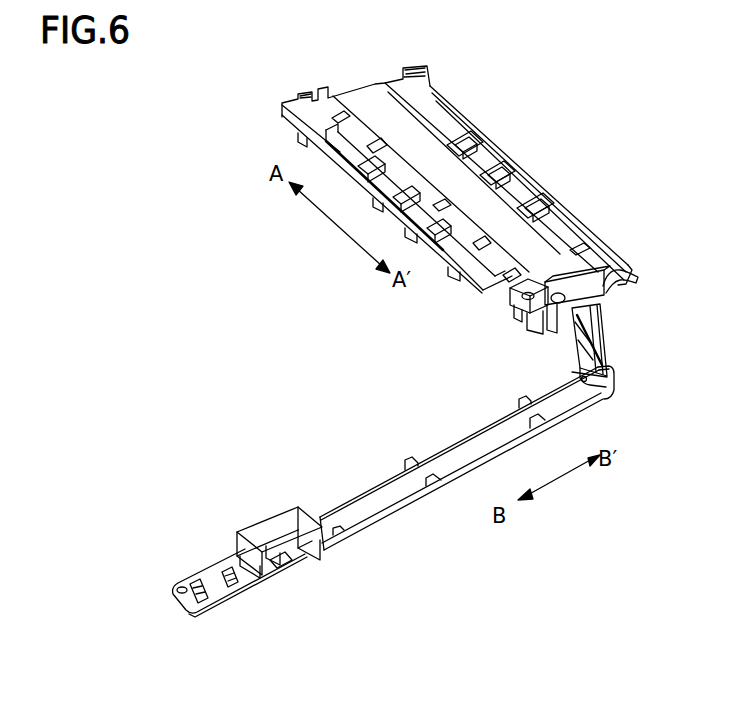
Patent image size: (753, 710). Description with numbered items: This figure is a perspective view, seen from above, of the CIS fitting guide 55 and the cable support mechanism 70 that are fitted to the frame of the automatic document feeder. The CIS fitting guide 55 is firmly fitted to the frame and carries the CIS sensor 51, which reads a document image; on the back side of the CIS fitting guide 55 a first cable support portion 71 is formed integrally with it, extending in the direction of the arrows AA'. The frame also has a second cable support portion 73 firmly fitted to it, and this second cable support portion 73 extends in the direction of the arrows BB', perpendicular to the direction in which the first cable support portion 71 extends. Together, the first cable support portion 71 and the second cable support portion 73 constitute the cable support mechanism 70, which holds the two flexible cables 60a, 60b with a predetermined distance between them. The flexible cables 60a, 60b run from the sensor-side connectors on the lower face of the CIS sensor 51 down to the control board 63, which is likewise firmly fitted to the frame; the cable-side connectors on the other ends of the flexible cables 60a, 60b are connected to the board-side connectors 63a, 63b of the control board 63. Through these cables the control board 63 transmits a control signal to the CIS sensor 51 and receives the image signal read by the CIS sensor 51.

The CIS sensor 51 is at (415, 137).
The CIS fitting guide 55 is at (572, 226).
The cable support mechanism 70 is at (384, 318).
The first cable support portion 71 is at (507, 288).
The second cable support portion 73 is at (480, 426).
The flexible cable 60a is at (268, 522).
The flexible cable 60b is at (300, 556).
The control board 63 is at (194, 571).
The board-side connector 63a is at (232, 557).
The board-side connector 63b is at (285, 568).